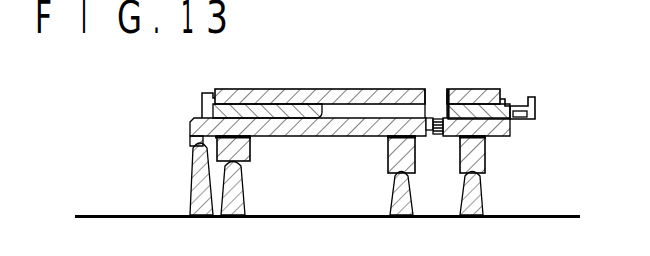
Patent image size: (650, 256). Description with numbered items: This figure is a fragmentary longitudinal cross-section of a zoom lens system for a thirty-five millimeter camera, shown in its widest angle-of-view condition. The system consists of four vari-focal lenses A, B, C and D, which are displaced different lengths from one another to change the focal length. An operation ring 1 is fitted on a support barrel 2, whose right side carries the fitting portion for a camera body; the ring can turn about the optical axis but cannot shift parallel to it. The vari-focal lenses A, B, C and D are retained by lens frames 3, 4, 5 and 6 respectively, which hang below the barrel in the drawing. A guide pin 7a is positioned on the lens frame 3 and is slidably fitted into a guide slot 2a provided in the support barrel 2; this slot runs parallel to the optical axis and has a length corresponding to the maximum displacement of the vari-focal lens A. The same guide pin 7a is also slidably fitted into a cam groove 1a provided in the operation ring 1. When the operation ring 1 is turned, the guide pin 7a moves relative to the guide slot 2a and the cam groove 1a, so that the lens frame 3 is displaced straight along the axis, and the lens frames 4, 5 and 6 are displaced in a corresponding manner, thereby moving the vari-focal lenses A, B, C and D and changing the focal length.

The operation ring 1 is at (349, 89).
The cam groove 1a is at (430, 89).
The support barrel 2 is at (505, 90).
The guide slot 2a is at (316, 105).
The lens frame 3 is at (200, 117).
The lens frame 4 is at (250, 150).
The lens frame 5 is at (388, 152).
The lens frame 6 is at (485, 152).
The guide pin 7a is at (444, 89).
The vari-focal lens A is at (190, 185).
The vari-focal lens B is at (245, 187).
The vari-focal lens C is at (393, 192).
The vari-focal lens D is at (483, 192).